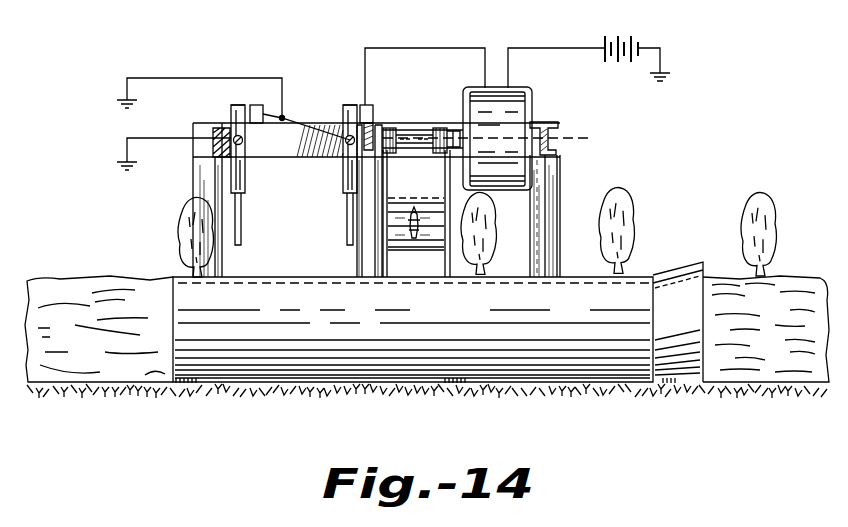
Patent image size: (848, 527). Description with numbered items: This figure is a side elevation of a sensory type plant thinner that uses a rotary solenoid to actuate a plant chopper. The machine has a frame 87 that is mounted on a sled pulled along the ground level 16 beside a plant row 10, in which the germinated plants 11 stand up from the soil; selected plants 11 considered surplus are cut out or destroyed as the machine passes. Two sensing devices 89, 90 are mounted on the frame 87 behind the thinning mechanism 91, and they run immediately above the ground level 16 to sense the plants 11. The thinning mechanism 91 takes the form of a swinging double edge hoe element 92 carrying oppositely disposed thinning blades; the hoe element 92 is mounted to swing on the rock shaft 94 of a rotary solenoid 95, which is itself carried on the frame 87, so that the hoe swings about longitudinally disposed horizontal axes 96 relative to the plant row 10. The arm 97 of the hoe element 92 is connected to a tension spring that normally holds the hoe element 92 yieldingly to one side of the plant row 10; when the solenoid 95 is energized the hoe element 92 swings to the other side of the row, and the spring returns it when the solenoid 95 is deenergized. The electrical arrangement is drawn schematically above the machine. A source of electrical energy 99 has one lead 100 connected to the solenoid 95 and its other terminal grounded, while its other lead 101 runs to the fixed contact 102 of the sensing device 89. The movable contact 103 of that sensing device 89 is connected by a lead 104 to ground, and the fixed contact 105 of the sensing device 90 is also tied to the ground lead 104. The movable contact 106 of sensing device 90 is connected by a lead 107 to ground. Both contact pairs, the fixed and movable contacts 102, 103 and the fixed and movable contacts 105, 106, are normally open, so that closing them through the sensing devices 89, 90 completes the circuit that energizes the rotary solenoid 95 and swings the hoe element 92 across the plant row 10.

The plant row 10 is at (770, 280).
The plants 11 is at (183, 237).
The ground level 16 is at (729, 278).
The frame 87 is at (558, 124).
The sensing device 89 is at (346, 170).
The sensing device 90 is at (251, 172).
The thinning mechanism 91 is at (370, 253).
The hoe element 92 is at (429, 284).
The rock shaft 94 is at (416, 130).
The rotary solenoid 95 is at (532, 97).
The horizontal axes 96 is at (585, 139).
The arm 97 is at (431, 248).
The source of electrical energy 99 is at (640, 45).
The lead 100 is at (558, 47).
The lead 101 is at (438, 48).
The fixed contact 102 is at (374, 106).
The movable contact 103 is at (346, 105).
The lead 104 is at (292, 120).
The fixed contact 105 is at (258, 104).
The movable contact 106 is at (235, 107).
The lead 107 is at (172, 131).